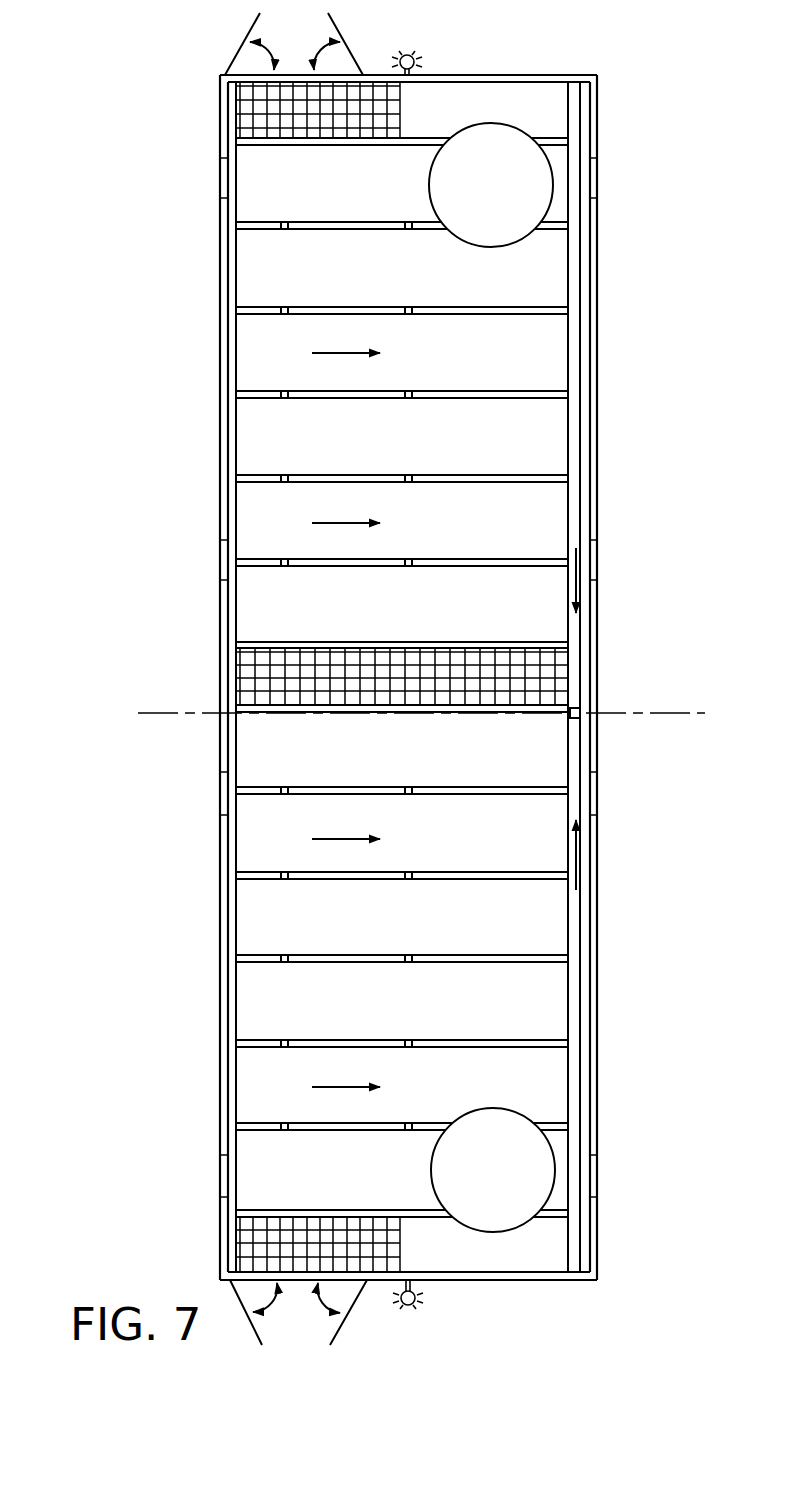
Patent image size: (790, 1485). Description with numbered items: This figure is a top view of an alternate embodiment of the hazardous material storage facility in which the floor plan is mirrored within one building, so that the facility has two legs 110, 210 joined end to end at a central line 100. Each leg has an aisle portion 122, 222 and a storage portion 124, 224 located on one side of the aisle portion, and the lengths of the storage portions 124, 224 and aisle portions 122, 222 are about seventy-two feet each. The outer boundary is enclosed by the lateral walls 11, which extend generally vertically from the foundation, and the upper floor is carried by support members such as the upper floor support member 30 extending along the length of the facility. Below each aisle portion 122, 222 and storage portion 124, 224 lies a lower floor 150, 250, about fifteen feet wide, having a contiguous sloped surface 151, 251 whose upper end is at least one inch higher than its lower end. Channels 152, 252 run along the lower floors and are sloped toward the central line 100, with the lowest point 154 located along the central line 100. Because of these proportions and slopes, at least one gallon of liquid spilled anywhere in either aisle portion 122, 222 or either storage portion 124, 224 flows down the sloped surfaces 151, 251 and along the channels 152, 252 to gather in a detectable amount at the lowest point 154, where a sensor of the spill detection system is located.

The lateral wall 11 is at (220, 265).
The upper floor support member 30 is at (230, 360).
The central line 100 is at (168, 712).
The leg 110 is at (190, 86).
The aisle portion 122 is at (375, 72).
The storage portion 124 is at (515, 72).
The lower floor 150 is at (525, 370).
The sloped surface 151 is at (530, 527).
The channel 152 is at (578, 447).
The lowest point 154 is at (577, 705).
The leg 210 is at (190, 783).
The aisle portion 222 is at (378, 1282).
The storage portion 224 is at (515, 1282).
The lower floor 250 is at (528, 1012).
The sloped surface 251 is at (537, 1073).
The channel 252 is at (580, 909).